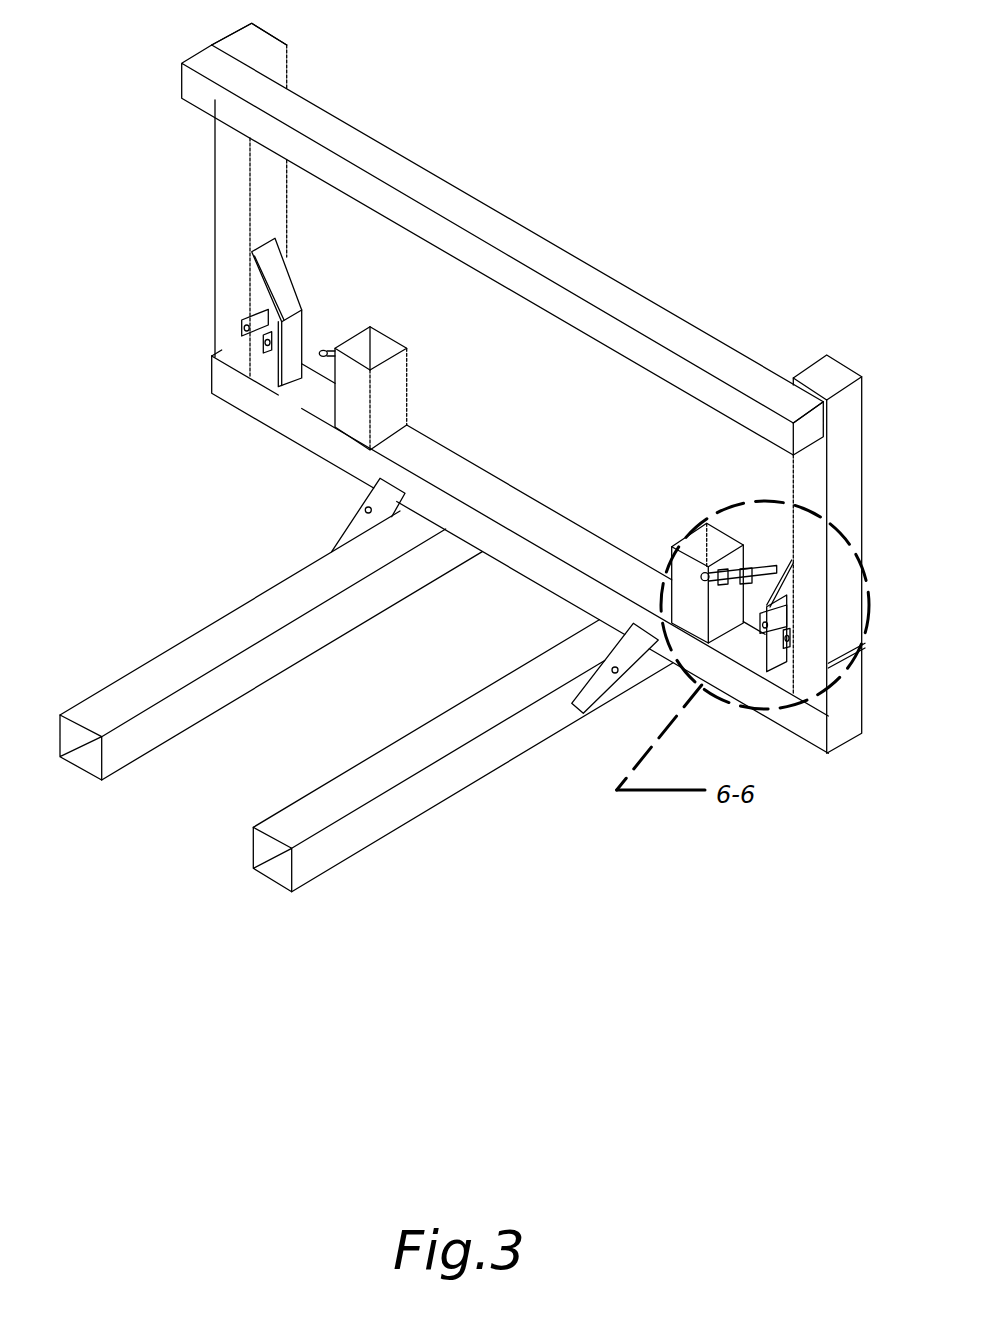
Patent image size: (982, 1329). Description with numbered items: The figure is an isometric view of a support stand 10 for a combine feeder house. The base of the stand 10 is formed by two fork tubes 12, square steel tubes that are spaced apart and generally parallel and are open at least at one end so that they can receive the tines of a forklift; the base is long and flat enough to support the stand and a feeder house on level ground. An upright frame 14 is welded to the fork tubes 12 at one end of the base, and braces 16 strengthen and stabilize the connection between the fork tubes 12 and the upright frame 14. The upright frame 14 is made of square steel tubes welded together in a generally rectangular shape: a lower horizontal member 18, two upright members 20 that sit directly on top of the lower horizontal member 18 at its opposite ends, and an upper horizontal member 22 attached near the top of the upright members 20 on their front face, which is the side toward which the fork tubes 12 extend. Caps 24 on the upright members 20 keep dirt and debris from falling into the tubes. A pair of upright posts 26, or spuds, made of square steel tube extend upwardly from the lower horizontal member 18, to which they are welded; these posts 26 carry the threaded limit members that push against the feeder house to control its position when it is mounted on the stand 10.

The support stand 10 is at (108, 218).
The fork tubes 12 is at (145, 687).
The upright frame 14 is at (228, 195).
The braces 16 is at (358, 522).
The lower horizontal member 18 is at (517, 500).
The upright members 20 is at (267, 222).
The upper horizontal member 22 is at (533, 247).
The caps 24 is at (253, 40).
The upright posts 26 is at (395, 372).